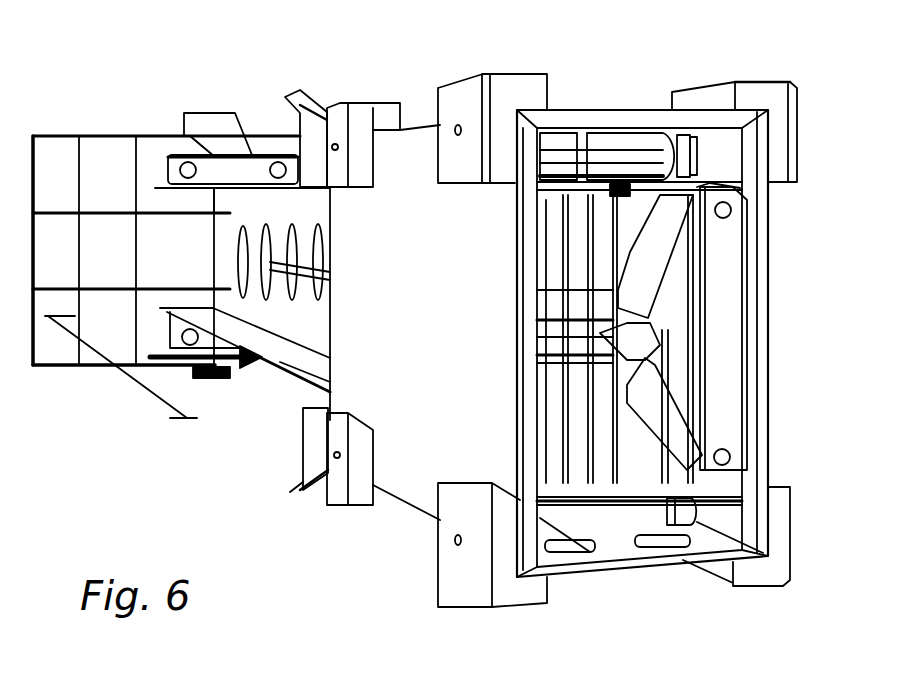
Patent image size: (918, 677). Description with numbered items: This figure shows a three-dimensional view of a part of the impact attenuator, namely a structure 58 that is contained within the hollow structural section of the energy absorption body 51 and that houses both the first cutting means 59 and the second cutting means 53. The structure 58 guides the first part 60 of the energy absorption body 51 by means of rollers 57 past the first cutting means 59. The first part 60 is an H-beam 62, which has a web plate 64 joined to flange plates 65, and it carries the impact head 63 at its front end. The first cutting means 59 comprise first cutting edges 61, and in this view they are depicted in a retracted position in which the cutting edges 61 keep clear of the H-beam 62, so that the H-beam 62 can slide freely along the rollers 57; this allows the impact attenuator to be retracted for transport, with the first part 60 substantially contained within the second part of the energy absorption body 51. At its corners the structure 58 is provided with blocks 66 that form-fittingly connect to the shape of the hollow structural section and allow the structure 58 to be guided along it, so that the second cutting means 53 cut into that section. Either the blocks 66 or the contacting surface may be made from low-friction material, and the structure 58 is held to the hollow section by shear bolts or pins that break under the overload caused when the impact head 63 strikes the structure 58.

The energy absorption body 51 is at (111, 370).
The second cutting means 53 is at (287, 94).
The rollers 57 is at (553, 147).
The structure 58 is at (420, 323).
The first cutting means 59 is at (665, 268).
The first part of the energy absorption body 60 is at (127, 369).
The first cutting edges 61 is at (627, 278).
The H-beam 62 is at (287, 318).
The impact head 63 is at (107, 150).
The web plate 64 is at (293, 222).
The flange plates 65 is at (303, 363).
The blocks 66 is at (336, 120).